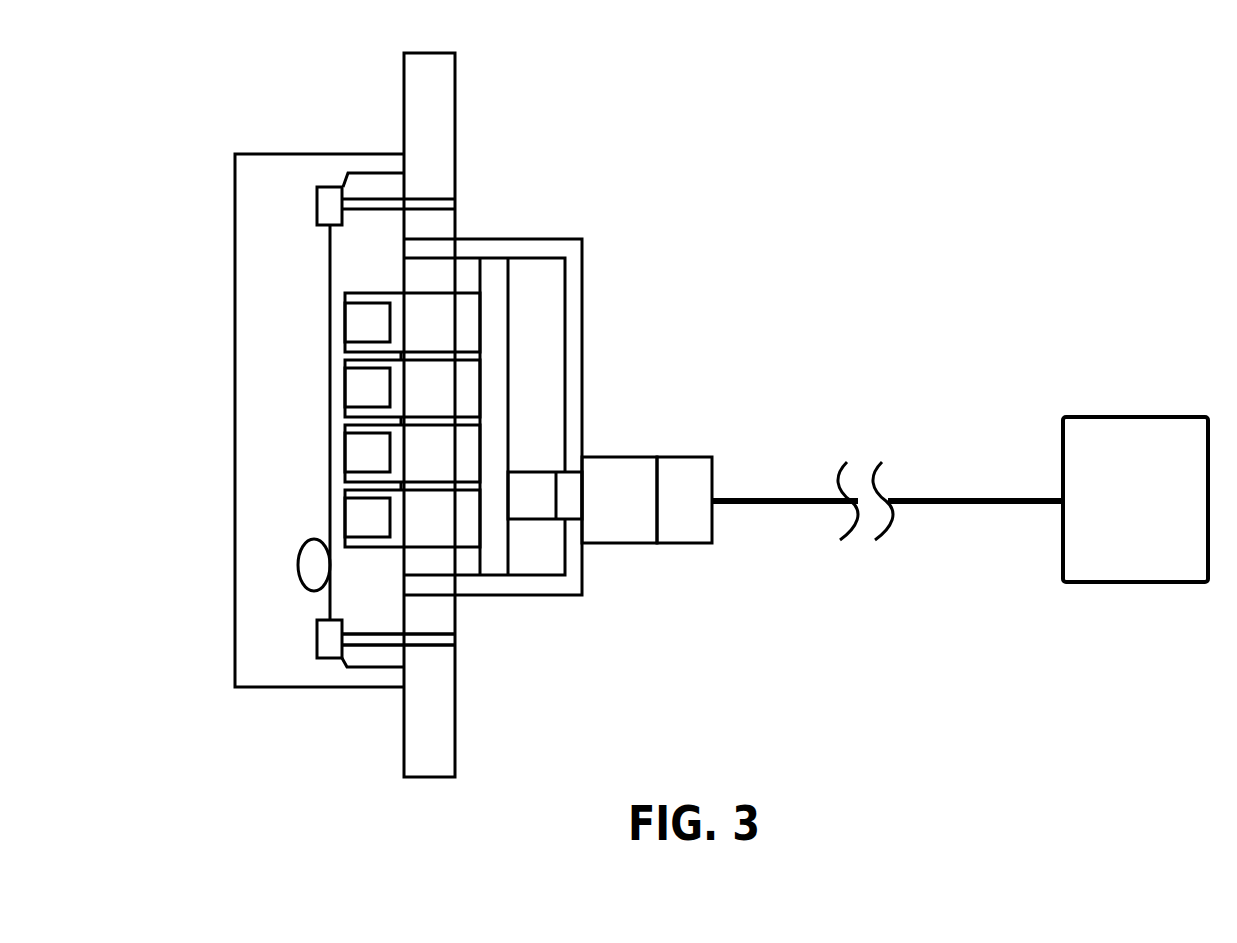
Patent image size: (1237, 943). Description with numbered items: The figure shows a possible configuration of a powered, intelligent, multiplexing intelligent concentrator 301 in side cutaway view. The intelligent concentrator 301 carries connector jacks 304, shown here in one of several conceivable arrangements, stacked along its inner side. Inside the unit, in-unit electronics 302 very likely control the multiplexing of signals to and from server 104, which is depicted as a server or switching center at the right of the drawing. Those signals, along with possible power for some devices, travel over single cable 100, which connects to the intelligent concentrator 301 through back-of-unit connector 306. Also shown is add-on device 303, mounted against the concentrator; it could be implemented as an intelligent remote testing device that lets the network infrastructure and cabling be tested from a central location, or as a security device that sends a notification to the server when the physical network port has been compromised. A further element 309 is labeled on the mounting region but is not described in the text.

The single cable 100 is at (938, 425).
The server 104 is at (1135, 499).
The intelligent concentrator 301 is at (485, 394).
The in-unit electronics 302 is at (601, 330).
The add-on device 303 is at (278, 386).
The connector jacks 304 is at (316, 420).
The back-of-unit connector 306 is at (688, 438).
The fastener / mounting bracket 309 is at (486, 663).